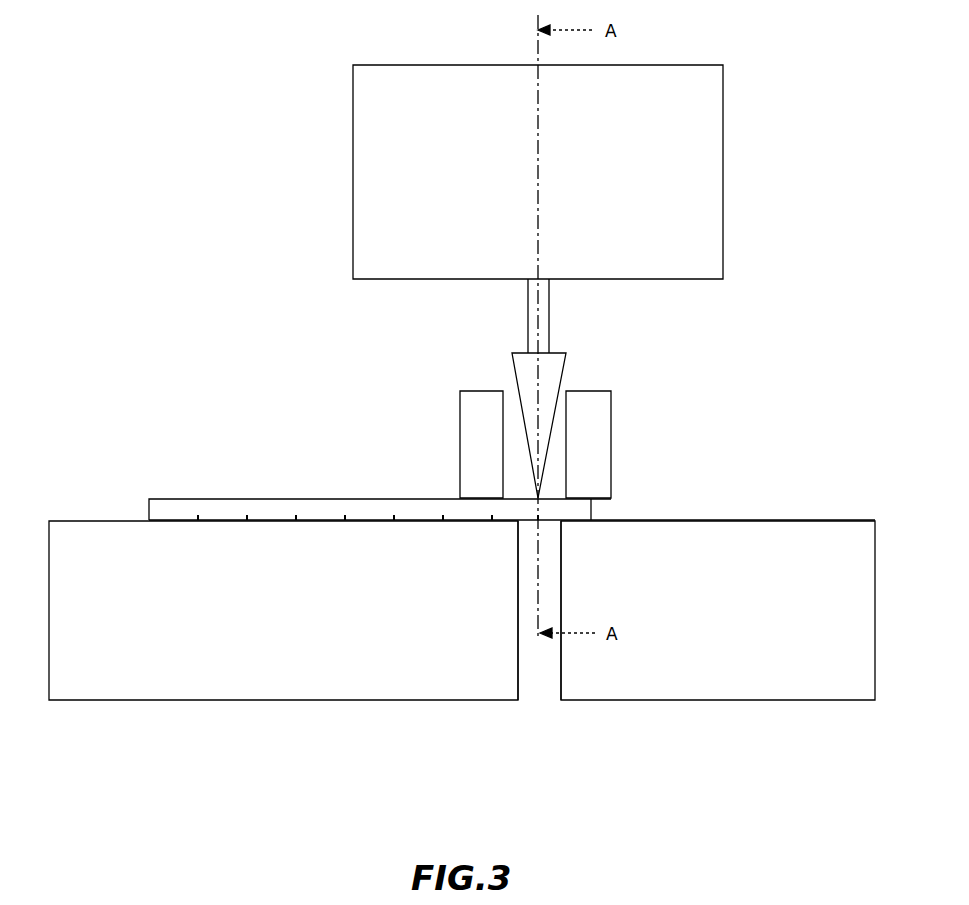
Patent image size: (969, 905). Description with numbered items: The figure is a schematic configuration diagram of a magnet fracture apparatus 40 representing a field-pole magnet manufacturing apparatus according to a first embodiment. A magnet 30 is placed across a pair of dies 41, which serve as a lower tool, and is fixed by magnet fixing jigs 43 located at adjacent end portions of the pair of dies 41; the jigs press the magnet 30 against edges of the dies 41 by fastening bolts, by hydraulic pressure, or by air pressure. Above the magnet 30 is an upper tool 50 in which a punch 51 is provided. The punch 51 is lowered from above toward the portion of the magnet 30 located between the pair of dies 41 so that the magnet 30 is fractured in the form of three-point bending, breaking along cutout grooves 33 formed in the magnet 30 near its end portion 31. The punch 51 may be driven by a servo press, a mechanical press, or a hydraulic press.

The magnet 30 is at (352, 505).
The edge portion of substrate 31 is at (582, 515).
The cutout grooves 33 is at (293, 518).
The magnet fracture apparatus 40 is at (285, 222).
The pair of dies 41 is at (490, 688).
The magnet fixing jigs 43 is at (478, 420).
The upper tool 50 is at (703, 182).
The punch 51 is at (555, 367).